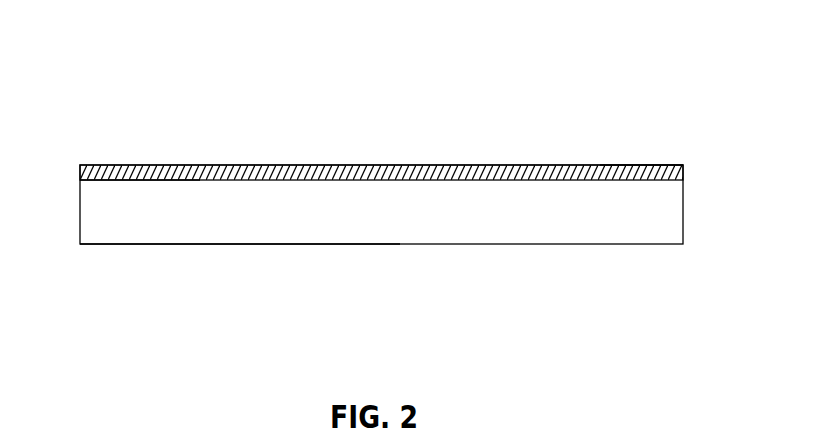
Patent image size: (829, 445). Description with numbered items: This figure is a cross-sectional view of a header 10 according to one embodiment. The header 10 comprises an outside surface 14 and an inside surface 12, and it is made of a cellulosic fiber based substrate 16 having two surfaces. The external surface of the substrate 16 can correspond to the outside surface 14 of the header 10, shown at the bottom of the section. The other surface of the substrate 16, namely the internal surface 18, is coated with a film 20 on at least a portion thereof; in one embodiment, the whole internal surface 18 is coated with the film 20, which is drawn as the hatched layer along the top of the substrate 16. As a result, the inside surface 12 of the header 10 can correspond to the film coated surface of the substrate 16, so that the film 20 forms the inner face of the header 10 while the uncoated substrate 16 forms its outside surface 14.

The header 10 is at (198, 105).
The inside surface 12 is at (453, 165).
The outside surface 14 is at (253, 244).
The cellulosic fiber based substrate 16 is at (672, 213).
The internal surface of the substrate 18 is at (97, 181).
The film 20 is at (655, 165).